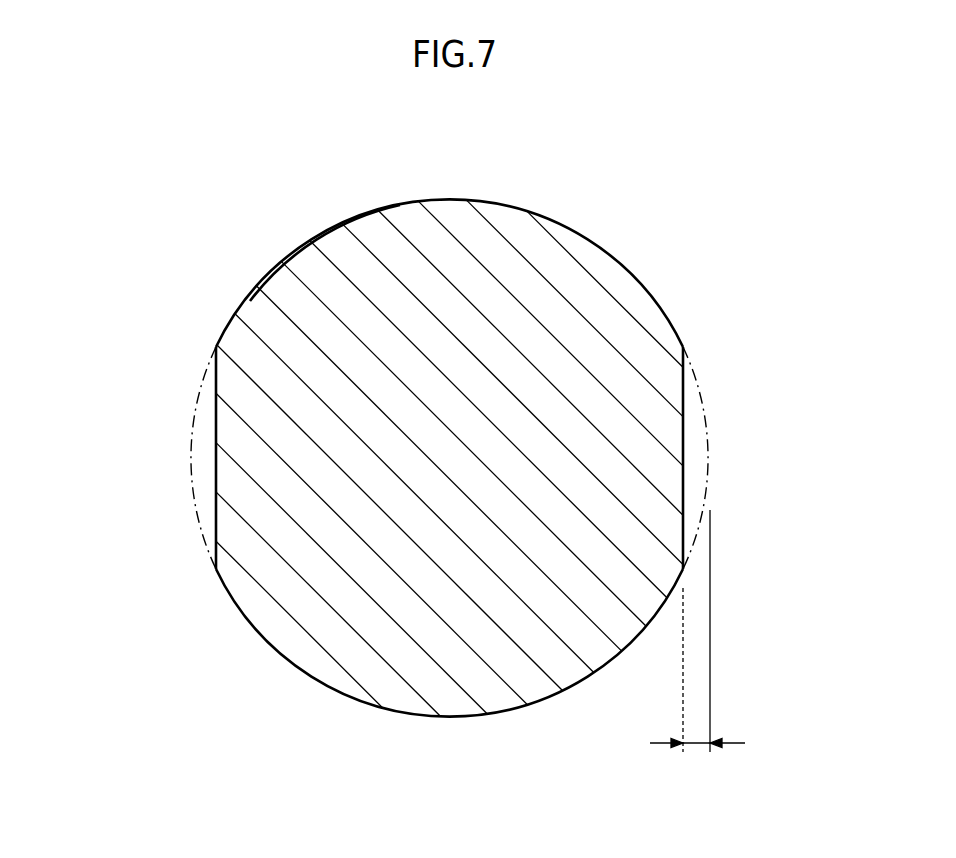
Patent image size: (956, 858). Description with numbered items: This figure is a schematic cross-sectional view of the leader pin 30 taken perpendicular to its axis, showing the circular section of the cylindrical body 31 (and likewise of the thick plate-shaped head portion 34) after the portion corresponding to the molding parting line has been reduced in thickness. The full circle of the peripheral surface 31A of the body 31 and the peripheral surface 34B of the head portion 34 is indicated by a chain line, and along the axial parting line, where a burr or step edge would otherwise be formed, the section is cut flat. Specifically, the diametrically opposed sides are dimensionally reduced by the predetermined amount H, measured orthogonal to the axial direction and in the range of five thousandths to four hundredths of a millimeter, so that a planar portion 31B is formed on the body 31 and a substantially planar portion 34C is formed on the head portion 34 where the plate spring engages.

The leader pin 30 is at (450, 416).
The body 31 is at (449, 231).
The head portion 34 is at (453, 200).
The peripheral surface of the body 31A is at (311, 234).
The peripheral surface of the head portion 34B is at (326, 238).
The planar portion 31B is at (450, 458).
The planar portion 34C is at (216, 434).
The predetermined amount H is at (697, 746).